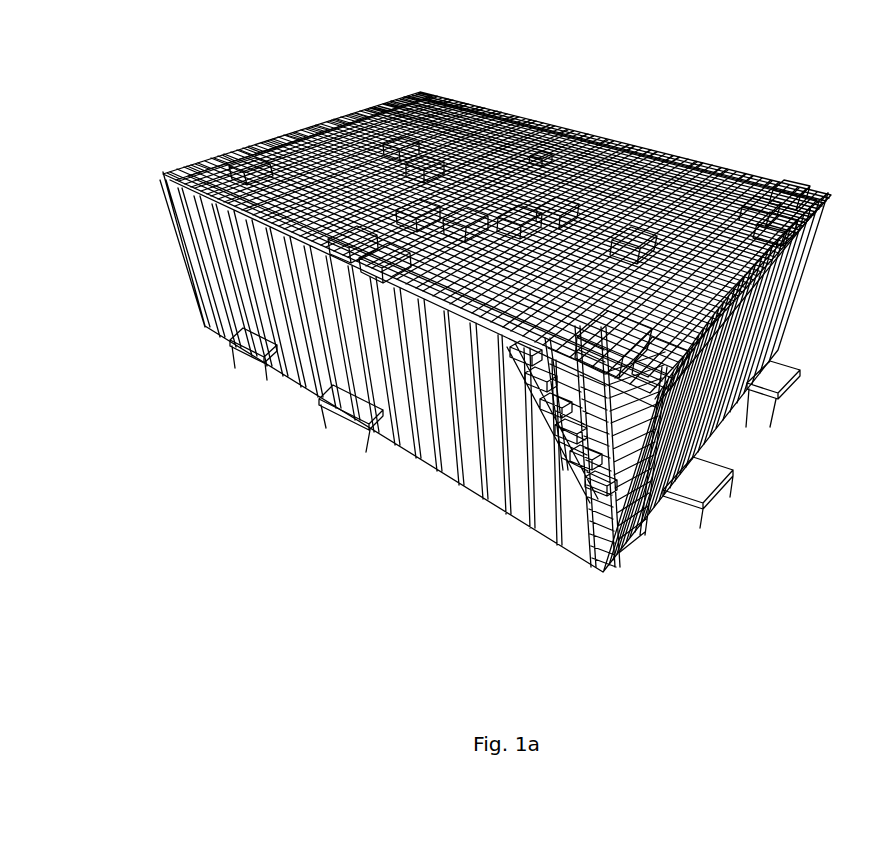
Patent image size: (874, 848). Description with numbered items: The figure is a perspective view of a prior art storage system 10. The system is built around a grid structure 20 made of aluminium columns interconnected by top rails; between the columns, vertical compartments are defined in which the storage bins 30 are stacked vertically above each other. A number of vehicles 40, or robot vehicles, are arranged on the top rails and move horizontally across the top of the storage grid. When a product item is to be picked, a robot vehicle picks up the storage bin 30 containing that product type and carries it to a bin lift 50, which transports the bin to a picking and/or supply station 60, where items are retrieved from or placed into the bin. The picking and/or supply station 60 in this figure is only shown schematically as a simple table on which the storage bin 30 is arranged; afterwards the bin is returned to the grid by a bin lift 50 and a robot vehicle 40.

The storage system 10 is at (157, 282).
The grid structure 20 is at (401, 98).
The storage bin 30 is at (592, 556).
The vehicle 40 is at (506, 120).
The bin lift 50 is at (313, 387).
The picking and/or supply station 60 is at (357, 414).